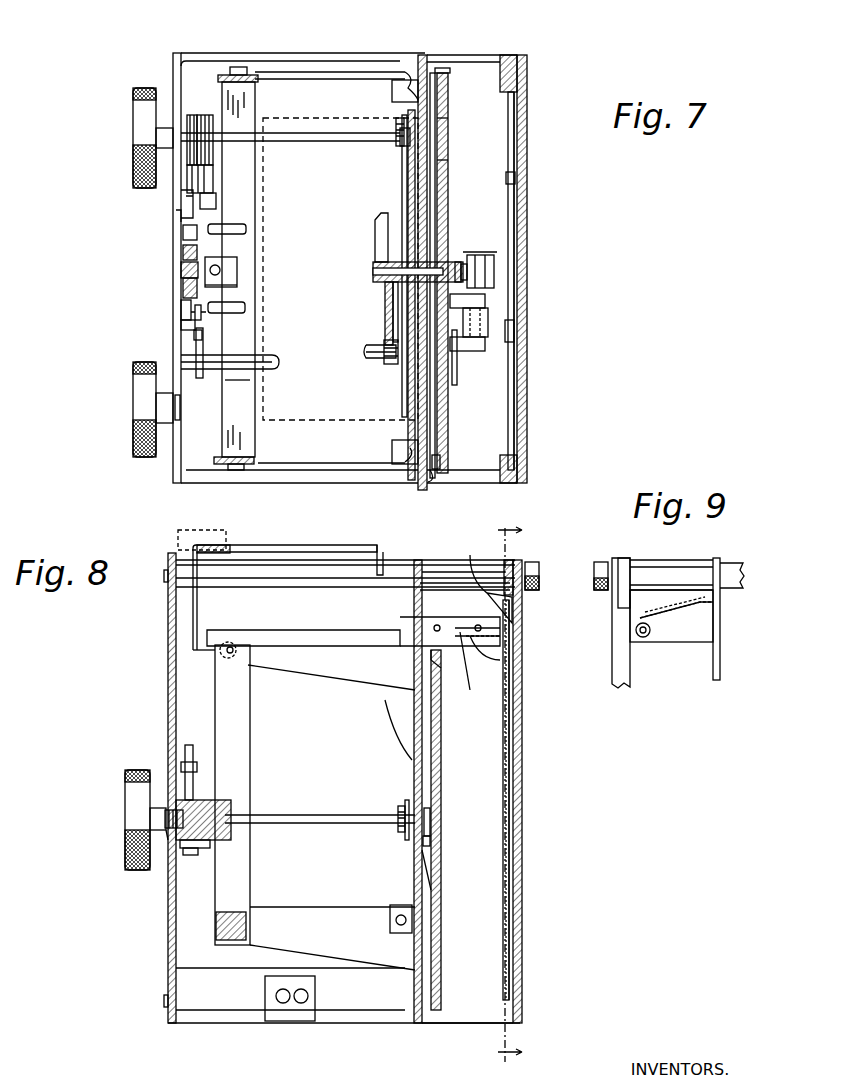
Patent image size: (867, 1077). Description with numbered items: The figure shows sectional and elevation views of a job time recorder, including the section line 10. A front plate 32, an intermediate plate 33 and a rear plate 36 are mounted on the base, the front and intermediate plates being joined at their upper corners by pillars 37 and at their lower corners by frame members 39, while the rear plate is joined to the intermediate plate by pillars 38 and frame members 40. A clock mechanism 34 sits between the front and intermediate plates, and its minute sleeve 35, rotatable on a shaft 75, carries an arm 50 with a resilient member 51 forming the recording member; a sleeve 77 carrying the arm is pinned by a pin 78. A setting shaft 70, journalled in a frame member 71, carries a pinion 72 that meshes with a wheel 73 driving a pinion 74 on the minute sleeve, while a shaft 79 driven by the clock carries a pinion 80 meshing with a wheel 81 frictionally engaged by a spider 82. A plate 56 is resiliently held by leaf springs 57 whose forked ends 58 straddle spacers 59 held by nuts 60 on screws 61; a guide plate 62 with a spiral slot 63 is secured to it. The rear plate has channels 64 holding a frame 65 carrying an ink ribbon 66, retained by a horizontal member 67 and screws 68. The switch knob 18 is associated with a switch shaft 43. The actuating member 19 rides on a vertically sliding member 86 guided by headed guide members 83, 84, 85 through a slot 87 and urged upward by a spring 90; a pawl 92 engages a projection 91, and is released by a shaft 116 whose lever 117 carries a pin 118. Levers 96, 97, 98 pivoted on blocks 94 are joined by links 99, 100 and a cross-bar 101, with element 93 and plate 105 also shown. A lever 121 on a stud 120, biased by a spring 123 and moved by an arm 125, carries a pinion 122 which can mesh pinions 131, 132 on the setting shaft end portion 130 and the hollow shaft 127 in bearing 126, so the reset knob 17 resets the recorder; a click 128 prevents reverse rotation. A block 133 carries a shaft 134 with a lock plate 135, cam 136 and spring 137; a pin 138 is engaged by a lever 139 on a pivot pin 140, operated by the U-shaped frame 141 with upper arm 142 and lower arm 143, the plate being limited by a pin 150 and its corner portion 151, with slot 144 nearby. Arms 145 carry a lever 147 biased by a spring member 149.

In FIG. 8, the section line 10 is at (492, 791).
In FIG. 7, the reset knob 17 is at (133, 128).
In FIG. 8, the reset knob 17 is at (138, 770).
In FIG. 7, the knob 18 is at (133, 428).
In FIG. 8, the manually depressible actuating member 19 is at (178, 540).
In FIG. 7, the front plate 32 is at (176, 58).
In FIG. 8, the front plate 32 is at (168, 627).
In FIG. 7, the intermediate plate 33 is at (423, 55).
In FIG. 8, the intermediate plate 33 is at (414, 735).
In FIG. 9, the intermediate plate 33 is at (720, 670).
In FIG. 7, the clock mechanism 34 is at (312, 425).
In FIG. 7, the minute sleeve 35 is at (375, 263).
In FIG. 7, the rear plate 36 is at (527, 410).
In FIG. 8, the rear plate 36 is at (522, 832).
In FIG. 9, the rear plate 36 is at (612, 650).
In FIG. 8, the pillars 37 is at (260, 578).
In FIG. 9, the pillars 37 is at (735, 563).
In FIG. 8, the pillars 38 is at (437, 560).
In FIG. 9, the pillars 38 is at (670, 560).
In FIG. 7, the frame members 39 is at (205, 55).
In FIG. 8, the frame members 39 is at (225, 1023).
In FIG. 7, the frame members 40 is at (500, 56).
In FIG. 8, the frame members 40 is at (428, 1023).
In FIG. 7, the switch shaft 43 is at (156, 400).
In FIG. 7, the arm 50 is at (497, 253).
In FIG. 7, the resilient member 51 is at (494, 260).
In FIG. 7, the plate 56 is at (448, 68).
In FIG. 8, the plate 56 is at (431, 765).
In FIG. 7, the leaf springs 57 is at (448, 130).
In FIG. 8, the leaf springs 57 is at (430, 830).
In FIG. 7, the forked ends 58 is at (434, 478).
In FIG. 7, the spacers 59 is at (440, 460).
In FIG. 7, the nuts 60 is at (436, 73).
In FIG. 8, the nuts 60 is at (430, 846).
In FIG. 7, the screws 61 is at (408, 75).
In FIG. 7, the guide plate 62 is at (448, 90).
In FIG. 8, the guide plate 62 is at (441, 758).
In FIG. 7, the spiral slot 63 is at (448, 158).
In FIG. 8, the spiral slot 63 is at (441, 732).
In FIG. 7, the channel 64 is at (518, 56).
In FIG. 7, the frame 65 is at (527, 75).
In FIG. 8, the frame 65 is at (510, 940).
In FIG. 7, the ribbon 66 is at (514, 138).
In FIG. 8, the ribbon 66 is at (509, 767).
In FIG. 8, the horizontal member 67 is at (513, 585).
In FIG. 9, the horizontal member 67 is at (628, 560).
In FIG. 8, the screws 68 is at (539, 566).
In FIG. 9, the screws 68 is at (600, 562).
In FIG. 7, the setting shaft 70 is at (308, 141).
In FIG. 8, the setting shaft 70 is at (302, 815).
In FIG. 7, the frame member 71 is at (402, 170).
In FIG. 8, the frame member 71 is at (405, 855).
In FIG. 7, the pinion 72 is at (396, 122).
In FIG. 8, the pinion 72 is at (398, 830).
In FIG. 7, the wheel 73 is at (402, 162).
In FIG. 7, the pinion 74 is at (385, 300).
In FIG. 7, the shaft 75 is at (373, 278).
In FIG. 7, the sleeve 77 is at (458, 262).
In FIG. 7, the pin 78 is at (465, 264).
In FIG. 7, the shaft 79 is at (368, 355).
In FIG. 7, the pinion 80 is at (390, 364).
In FIG. 7, the wheel 81 is at (393, 325).
In FIG. 7, the spider 82 is at (375, 230).
In FIG. 7, the headed guide member 83 is at (183, 288).
In FIG. 7, the headed guide member 84 is at (246, 230).
In FIG. 7, the headed guide member 85 is at (245, 308).
In FIG. 7, the vertically sliding member 86 is at (183, 252).
In FIG. 7, the slot 87 is at (181, 270).
In FIG. 7, the spring 90 is at (237, 272).
In FIG. 7, the projection 91 is at (181, 308).
In FIG. 7, the pawl 92 is at (181, 326).
In FIG. 7, the lever 93 is at (206, 312).
In FIG. 7, the blocks 94 is at (392, 90).
In FIG. 8, the blocks 94 is at (385, 700).
In FIG. 8, the lever 96 is at (312, 675).
In FIG. 7, the lever 97 is at (294, 468).
In FIG. 7, the lever 98 is at (320, 72).
In FIG. 8, the lever 98 is at (318, 907).
In FIG. 7, the link 99 is at (210, 458).
In FIG. 7, the link 100 is at (257, 82).
In FIG. 8, the link 100 is at (250, 728).
In FIG. 7, the cross-bar 101 is at (250, 398).
In FIG. 8, the cross-bar 101 is at (246, 912).
In FIG. 7, the plate 105 is at (237, 287).
In FIG. 7, the shaft 116 is at (279, 362).
In FIG. 7, the lever 117 is at (200, 378).
In FIG. 7, the pin 118 is at (202, 335).
In FIG. 7, the stud 120 is at (216, 203).
In FIG. 7, the lever 121 is at (176, 216).
In FIG. 7, the pinion 122 is at (212, 178).
In FIG. 7, the spring 123 is at (181, 200).
In FIG. 7, the arm 125 is at (183, 233).
In FIG. 8, the bearing 126 is at (166, 840).
In FIG. 8, the hollow shaft 127 is at (165, 812).
In FIG. 8, the click 128 is at (189, 745).
In FIG. 8, the end portion 130 is at (231, 808).
In FIG. 7, the pinion 131 is at (205, 115).
In FIG. 8, the pinion 131 is at (210, 845).
In FIG. 7, the pinion 132 is at (190, 115).
In FIG. 8, the pinion 132 is at (190, 855).
In FIG. 9, the block 133 is at (700, 640).
In FIG. 8, the shaft 134 is at (500, 627).
In FIG. 9, the shaft 134 is at (643, 637).
In FIG. 8, the lock plate 135 is at (470, 666).
In FIG. 9, the cam 136 is at (650, 634).
In FIG. 9, the spring 137 is at (690, 605).
In FIG. 8, the pin 138 is at (500, 660).
In FIG. 8, the lever 139 is at (290, 632).
In FIG. 8, the pivot pin 140 is at (435, 626).
In FIG. 8, the U-shaped frame 141 is at (296, 545).
In FIG. 8, the upper arm 142 is at (383, 548).
In FIG. 8, the lower arm 143 is at (205, 650).
In FIG. 8, the slot 144 is at (500, 640).
In FIG. 7, the arms 145 is at (485, 300).
In FIG. 7, the lever 147 is at (488, 322).
In FIG. 7, the spring member 149 is at (456, 365).
In FIG. 8, the pin 150 is at (478, 605).
In FIG. 8, the corner portion 151 is at (472, 565).